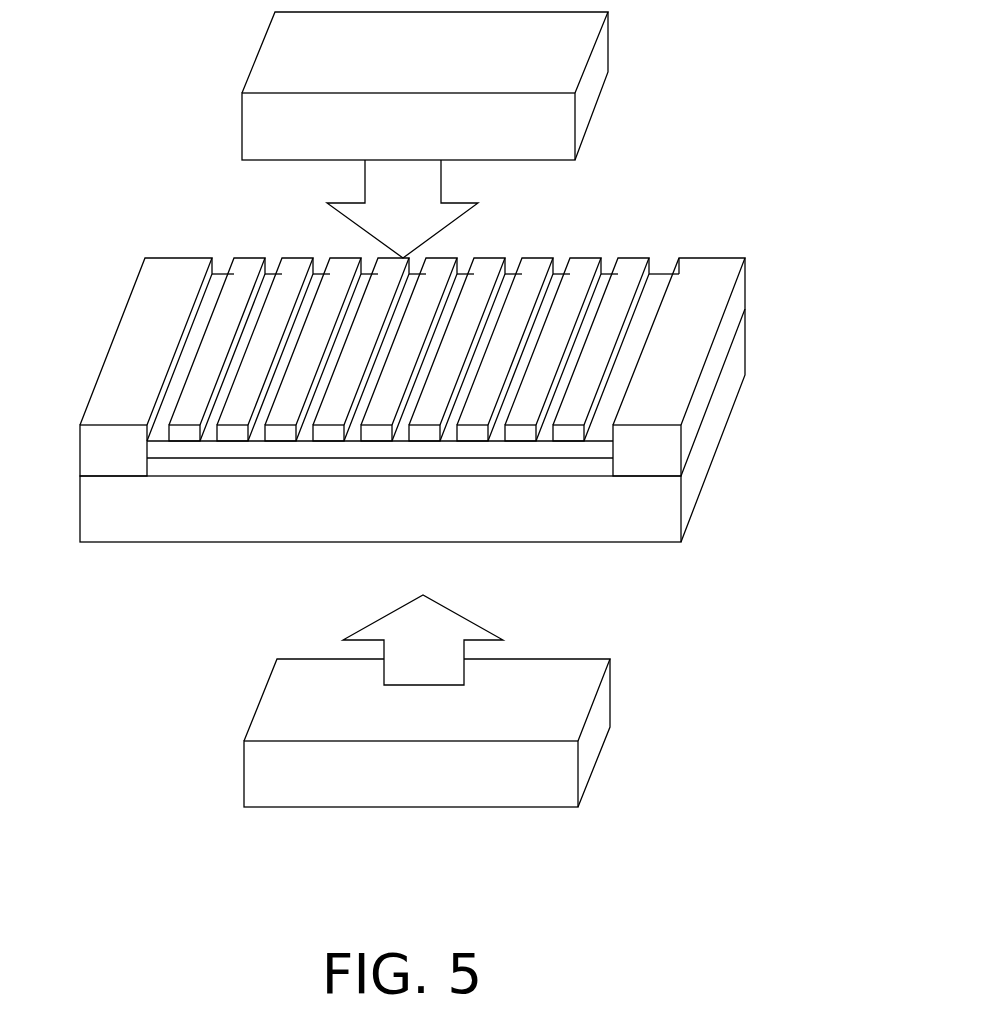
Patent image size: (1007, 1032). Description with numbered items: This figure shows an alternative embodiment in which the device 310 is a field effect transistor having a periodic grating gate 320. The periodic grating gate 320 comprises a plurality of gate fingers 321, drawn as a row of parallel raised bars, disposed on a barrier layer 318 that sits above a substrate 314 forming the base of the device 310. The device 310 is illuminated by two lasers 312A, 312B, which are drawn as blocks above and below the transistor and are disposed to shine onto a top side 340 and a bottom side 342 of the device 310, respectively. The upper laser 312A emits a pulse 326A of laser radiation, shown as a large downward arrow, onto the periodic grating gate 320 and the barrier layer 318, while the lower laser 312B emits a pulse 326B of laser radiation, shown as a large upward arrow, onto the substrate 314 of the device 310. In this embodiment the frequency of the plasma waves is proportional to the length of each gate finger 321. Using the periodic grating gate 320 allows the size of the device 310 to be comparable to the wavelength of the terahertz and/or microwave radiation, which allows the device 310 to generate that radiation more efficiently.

The device 310 is at (399, 409).
The laser 312A is at (374, 140).
The laser 312B is at (385, 786).
The substrate 314 is at (365, 526).
The barrier layer 318 is at (243, 448).
The periodic grating gate 320 is at (412, 384).
The gate finger 321 is at (492, 260).
The pulse 326A is at (374, 206).
The pulse 326B is at (394, 662).
The top side 340 is at (647, 190).
The bottom side 342 is at (720, 600).